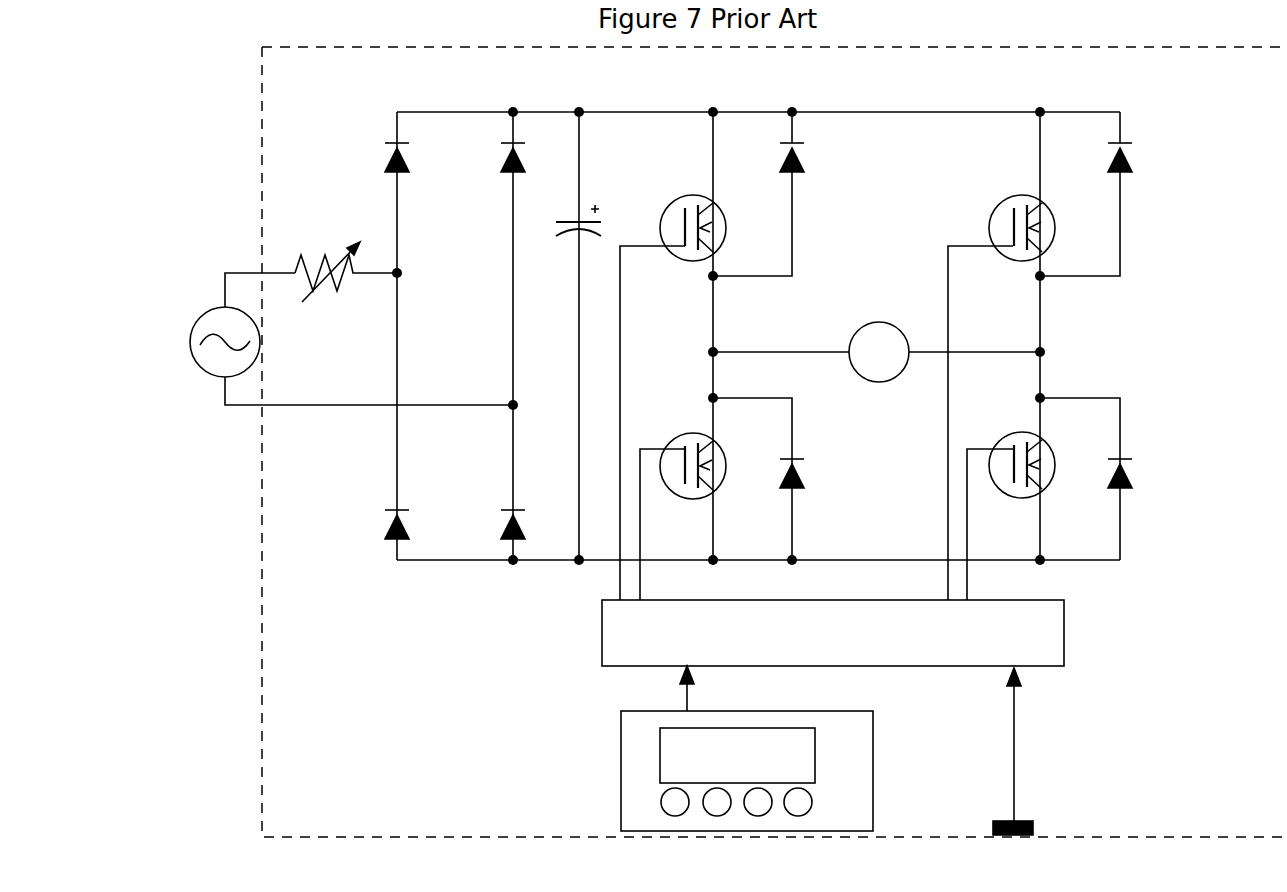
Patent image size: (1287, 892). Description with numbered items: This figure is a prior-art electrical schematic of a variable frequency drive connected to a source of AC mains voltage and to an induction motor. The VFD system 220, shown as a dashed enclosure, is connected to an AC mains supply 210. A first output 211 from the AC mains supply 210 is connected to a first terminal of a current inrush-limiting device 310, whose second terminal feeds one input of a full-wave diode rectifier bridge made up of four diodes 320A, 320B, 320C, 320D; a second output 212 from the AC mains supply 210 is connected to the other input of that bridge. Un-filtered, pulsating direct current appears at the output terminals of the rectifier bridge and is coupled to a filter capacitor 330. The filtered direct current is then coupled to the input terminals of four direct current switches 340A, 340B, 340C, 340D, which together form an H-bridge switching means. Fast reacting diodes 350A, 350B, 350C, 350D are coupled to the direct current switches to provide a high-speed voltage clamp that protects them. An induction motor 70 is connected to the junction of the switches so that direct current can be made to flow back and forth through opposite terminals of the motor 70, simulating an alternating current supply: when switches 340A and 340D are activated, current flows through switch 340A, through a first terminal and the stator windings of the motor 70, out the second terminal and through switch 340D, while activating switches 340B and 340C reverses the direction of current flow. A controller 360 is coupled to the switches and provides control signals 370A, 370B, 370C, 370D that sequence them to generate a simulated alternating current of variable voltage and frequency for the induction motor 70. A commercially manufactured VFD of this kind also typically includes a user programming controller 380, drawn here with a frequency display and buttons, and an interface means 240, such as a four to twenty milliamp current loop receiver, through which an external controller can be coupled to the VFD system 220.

The VFD system 220 is at (1083, 47).
The AC mains supply 210 is at (218, 302).
The first output 211 is at (248, 273).
The second output 212 is at (223, 393).
The current inrush-limiting device 310 is at (333, 300).
The rectifier bridge component 320A is at (372, 160).
The rectifier bridge component 320B is at (497, 140).
The rectifier bridge component 320C is at (375, 520).
The rectifier bridge component 320D is at (497, 537).
The filter capacitor 330 is at (575, 237).
The direct current switch 340A is at (697, 195).
The direct current switch 340B is at (1012, 195).
The direct current switch 340C is at (697, 432).
The direct current switch 340D is at (1020, 433).
The fast reacting diode 350A is at (820, 160).
The fast reacting diode 350B is at (1145, 157).
The fast reacting diode 350C is at (815, 472).
The fast reacting diode 350D is at (1148, 477).
The induction motor 70 is at (870, 322).
The controller 360 is at (1066, 668).
The control signal 370A is at (615, 574).
The control signal 370B is at (640, 573).
The control signal 370C is at (942, 572).
The control signal 370D is at (975, 578).
The user programming controller 380 is at (875, 765).
The interface means 240 is at (1033, 818).